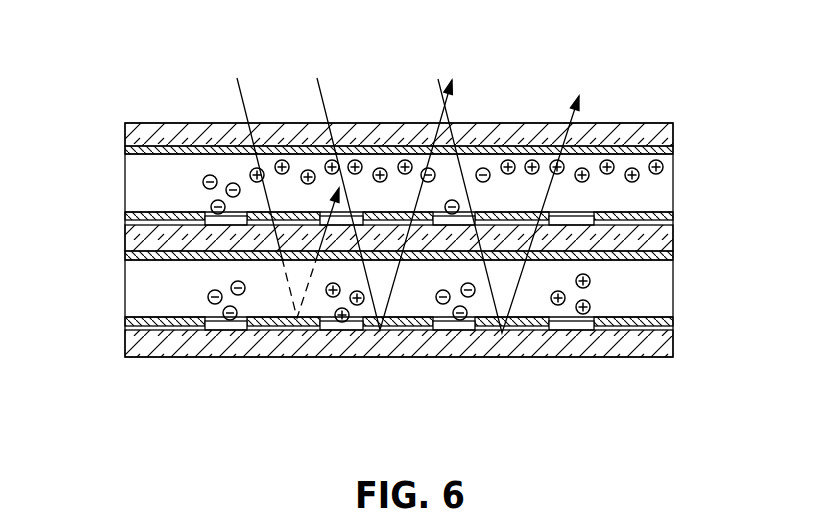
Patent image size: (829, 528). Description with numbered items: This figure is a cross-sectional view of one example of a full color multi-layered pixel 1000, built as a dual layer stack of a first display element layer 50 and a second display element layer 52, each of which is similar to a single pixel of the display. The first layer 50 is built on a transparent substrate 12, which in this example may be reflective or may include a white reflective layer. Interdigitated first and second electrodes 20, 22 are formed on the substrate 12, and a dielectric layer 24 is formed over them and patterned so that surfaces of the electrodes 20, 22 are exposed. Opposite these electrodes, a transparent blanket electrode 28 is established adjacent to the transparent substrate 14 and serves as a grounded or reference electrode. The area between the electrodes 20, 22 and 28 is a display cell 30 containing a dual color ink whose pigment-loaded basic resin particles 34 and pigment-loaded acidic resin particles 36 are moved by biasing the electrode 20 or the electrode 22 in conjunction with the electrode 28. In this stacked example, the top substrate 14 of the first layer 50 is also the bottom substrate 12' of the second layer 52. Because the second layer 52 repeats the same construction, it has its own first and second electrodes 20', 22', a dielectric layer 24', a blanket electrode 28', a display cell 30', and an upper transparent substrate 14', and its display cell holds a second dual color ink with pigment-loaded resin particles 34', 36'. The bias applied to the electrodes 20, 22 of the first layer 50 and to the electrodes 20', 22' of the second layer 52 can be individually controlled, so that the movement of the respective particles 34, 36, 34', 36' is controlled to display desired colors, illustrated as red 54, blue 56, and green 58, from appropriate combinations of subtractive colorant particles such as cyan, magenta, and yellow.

The full color multi-layered pixel 1000 is at (532, 58).
The second display element layer 52 is at (118, 184).
The first display element layer 50 is at (118, 290).
The red 54 is at (236, 79).
The blue 56 is at (322, 76).
The green 58 is at (437, 79).
The second transparent substrate 14' is at (426, 115).
The second transparent electrode layer 28' is at (443, 154).
The second fluid chamber 30' is at (442, 183).
The second dielectric layer 24' is at (442, 218).
The first electrode of the second layer 20' is at (315, 252).
The second electrode of the second layer 22' is at (482, 260).
The transparent substrate 14 is at (467, 244).
The bottom substrate of the second layer 12' is at (467, 244).
The blanket electrode 28 is at (439, 270).
The display cell 30 is at (439, 288).
The dielectric layer 24 is at (439, 328).
The first electrode 20 is at (341, 377).
The second electrode 22 is at (458, 377).
The transparent substrate 12 is at (439, 351).
The pigment-loaded acidic resin particles of the second layer 36' is at (324, 141).
The pigment-loaded basic resin particles of the second layer 34' is at (456, 114).
The pigment-loaded acidic resin particles 36 is at (295, 342).
The pigment-loaded basic resin particles 34 is at (429, 339).